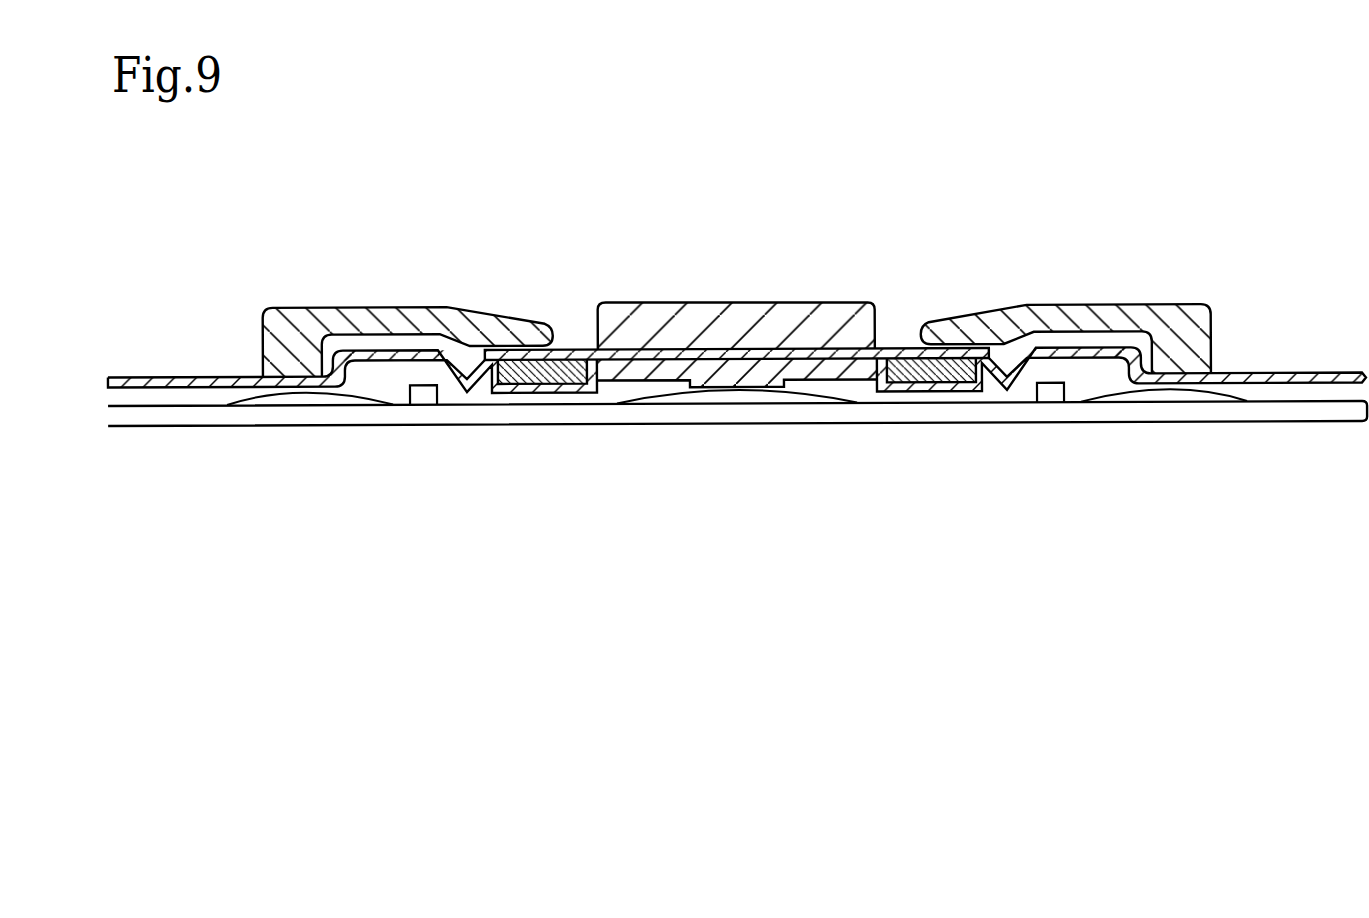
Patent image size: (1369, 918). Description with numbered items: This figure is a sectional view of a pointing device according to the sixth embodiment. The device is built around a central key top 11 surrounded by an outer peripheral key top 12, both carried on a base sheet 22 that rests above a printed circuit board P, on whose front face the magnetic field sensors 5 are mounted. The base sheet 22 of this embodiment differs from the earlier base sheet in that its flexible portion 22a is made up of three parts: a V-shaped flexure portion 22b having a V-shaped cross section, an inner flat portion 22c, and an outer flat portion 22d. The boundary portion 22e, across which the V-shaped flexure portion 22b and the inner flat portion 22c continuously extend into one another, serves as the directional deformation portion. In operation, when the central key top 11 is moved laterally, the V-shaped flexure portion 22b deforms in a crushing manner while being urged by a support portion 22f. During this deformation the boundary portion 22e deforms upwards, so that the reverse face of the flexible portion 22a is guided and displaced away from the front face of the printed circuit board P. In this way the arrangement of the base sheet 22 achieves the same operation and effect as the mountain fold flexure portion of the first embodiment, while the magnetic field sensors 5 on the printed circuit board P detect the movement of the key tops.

The magnetic field sensors 5 is at (410, 404).
The central key top 11 is at (822, 290).
The outer peripheral key top 12 is at (1143, 290).
The base sheet 22 is at (1264, 362).
The flexible portion 22a is at (1100, 360).
The V-shaped flexure portion 22b is at (470, 392).
The inner flat portion 22c is at (376, 349).
The outer flat portion 22d is at (190, 376).
The boundary portion 22e is at (458, 324).
The support portion 22f is at (915, 392).
The printed circuit board P is at (1287, 424).